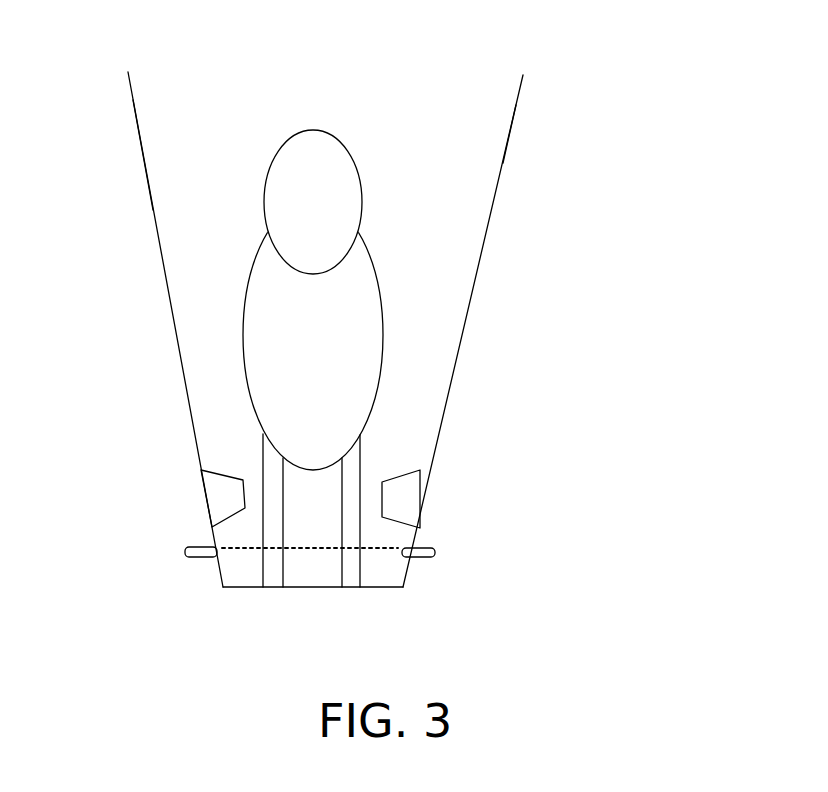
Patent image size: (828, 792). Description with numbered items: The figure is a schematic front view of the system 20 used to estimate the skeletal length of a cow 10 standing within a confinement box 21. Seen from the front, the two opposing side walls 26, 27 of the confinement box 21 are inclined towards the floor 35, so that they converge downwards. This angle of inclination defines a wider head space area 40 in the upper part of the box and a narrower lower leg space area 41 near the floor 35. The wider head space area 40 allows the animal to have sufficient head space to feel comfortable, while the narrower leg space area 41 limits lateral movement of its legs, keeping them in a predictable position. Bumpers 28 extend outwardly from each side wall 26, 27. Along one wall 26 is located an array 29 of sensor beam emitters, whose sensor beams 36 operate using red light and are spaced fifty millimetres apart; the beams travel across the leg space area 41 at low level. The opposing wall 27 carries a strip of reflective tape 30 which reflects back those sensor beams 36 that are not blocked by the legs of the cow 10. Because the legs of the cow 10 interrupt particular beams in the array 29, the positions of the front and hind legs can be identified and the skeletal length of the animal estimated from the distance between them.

The cow 10 is at (358, 292).
The system 20 is at (383, 329).
The confinement box 21 is at (158, 295).
The side wall 26 is at (155, 210).
The side wall 27 is at (497, 163).
The bumpers 28 is at (403, 497).
The array of sensor beams 29 is at (436, 552).
The strip of reflective tape 30 is at (185, 552).
The floor 35 is at (376, 589).
The sensor beams 36 is at (308, 550).
The head space area 40 is at (332, 108).
The leg space area 41 is at (247, 508).